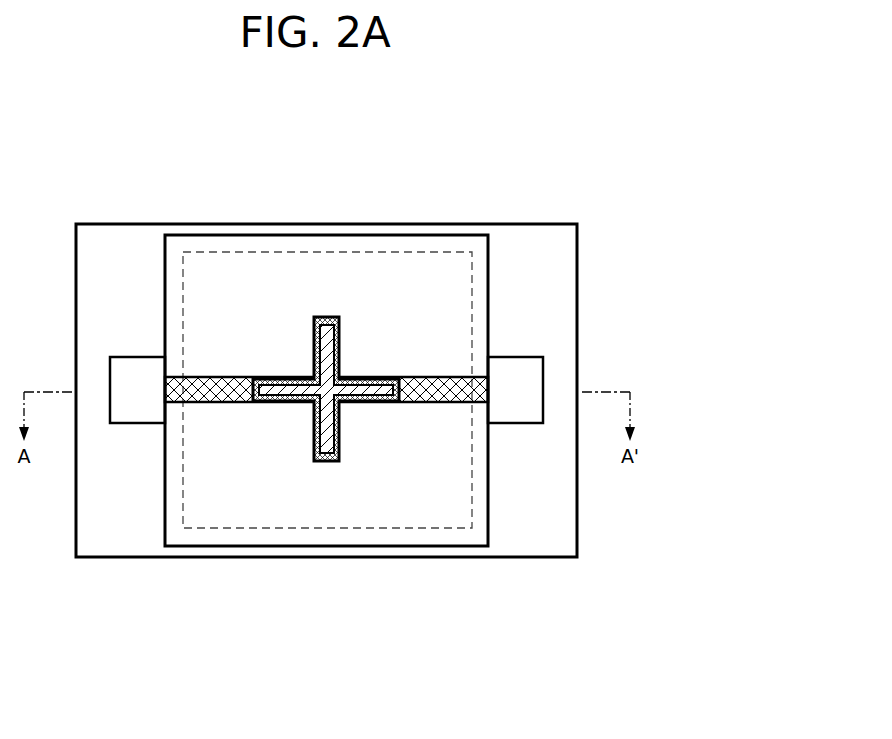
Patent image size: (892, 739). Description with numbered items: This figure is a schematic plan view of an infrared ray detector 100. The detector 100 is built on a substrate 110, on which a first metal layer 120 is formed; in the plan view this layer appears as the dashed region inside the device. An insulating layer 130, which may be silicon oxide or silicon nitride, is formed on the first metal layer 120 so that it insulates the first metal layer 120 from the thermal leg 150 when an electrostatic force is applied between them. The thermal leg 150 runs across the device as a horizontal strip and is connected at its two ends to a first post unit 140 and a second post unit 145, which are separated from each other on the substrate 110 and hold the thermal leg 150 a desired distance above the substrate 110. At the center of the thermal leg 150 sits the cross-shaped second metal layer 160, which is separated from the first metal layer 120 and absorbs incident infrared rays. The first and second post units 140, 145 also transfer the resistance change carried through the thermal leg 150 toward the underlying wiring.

The infrared ray detector 100 is at (585, 188).
The substrate 110 is at (533, 238).
The first metal layer 120 is at (313, 252).
The insulating layer 130 is at (387, 235).
The first post unit 140 is at (115, 370).
The second post unit 145 is at (535, 372).
The thermal leg 150 is at (432, 403).
The second metal layer 160 is at (317, 343).